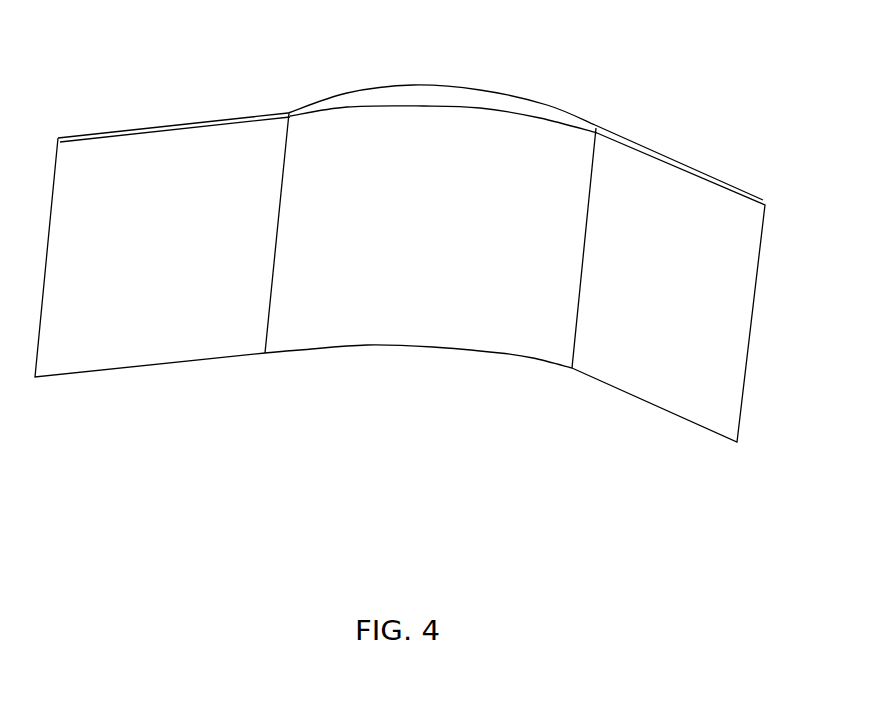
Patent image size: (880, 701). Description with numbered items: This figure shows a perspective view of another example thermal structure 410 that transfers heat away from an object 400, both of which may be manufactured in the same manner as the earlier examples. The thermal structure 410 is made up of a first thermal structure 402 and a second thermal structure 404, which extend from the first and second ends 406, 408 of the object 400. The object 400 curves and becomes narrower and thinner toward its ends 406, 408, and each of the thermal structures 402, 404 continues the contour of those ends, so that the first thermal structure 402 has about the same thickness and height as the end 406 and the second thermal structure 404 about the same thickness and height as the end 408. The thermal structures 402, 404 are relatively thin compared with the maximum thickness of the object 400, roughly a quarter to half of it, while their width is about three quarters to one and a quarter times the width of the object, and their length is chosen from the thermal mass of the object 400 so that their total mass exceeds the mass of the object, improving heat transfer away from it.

The object 400 is at (413, 137).
The first thermal structure 402 is at (125, 145).
The second thermal structure 404 is at (687, 190).
The first end 406 is at (294, 111).
The second end 408 is at (588, 123).
The thermal structure 410 is at (207, 392).